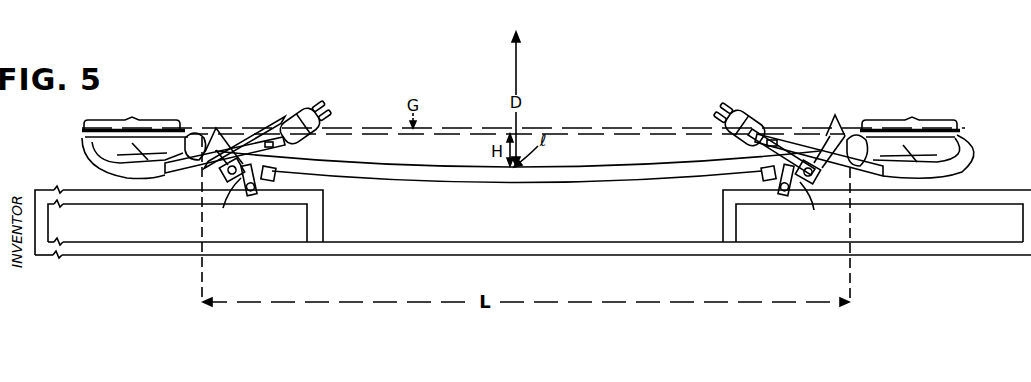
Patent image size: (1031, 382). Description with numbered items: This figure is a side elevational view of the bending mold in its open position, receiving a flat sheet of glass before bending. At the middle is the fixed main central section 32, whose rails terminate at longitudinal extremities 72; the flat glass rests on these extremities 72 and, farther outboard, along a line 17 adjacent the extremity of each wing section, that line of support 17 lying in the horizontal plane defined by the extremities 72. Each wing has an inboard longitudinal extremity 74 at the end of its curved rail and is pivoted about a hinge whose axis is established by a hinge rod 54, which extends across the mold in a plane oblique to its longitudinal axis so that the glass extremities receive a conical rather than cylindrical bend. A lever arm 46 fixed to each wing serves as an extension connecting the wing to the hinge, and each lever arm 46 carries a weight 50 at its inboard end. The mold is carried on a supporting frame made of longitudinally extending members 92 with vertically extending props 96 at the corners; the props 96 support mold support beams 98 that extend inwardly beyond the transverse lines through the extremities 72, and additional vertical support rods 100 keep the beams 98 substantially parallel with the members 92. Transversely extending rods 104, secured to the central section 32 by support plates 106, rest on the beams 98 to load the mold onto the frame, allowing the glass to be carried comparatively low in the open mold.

The line of support 17 is at (132, 118).
The main central section 32 is at (503, 183).
The lever arm 46 is at (328, 114).
The weight 50 is at (749, 110).
The hinge rod 54 is at (816, 173).
The longitudinal extremity 72 is at (216, 128).
The inboard longitudinal extremity 74 is at (197, 134).
The longitudinally extending member 92 is at (165, 256).
The vertically extending prop 96 is at (48, 221).
The mold support beam 98 is at (995, 179).
The vertical support rod 100 is at (324, 218).
The transversely extending rod 104 is at (252, 196).
The support plate 106 is at (523, 194).